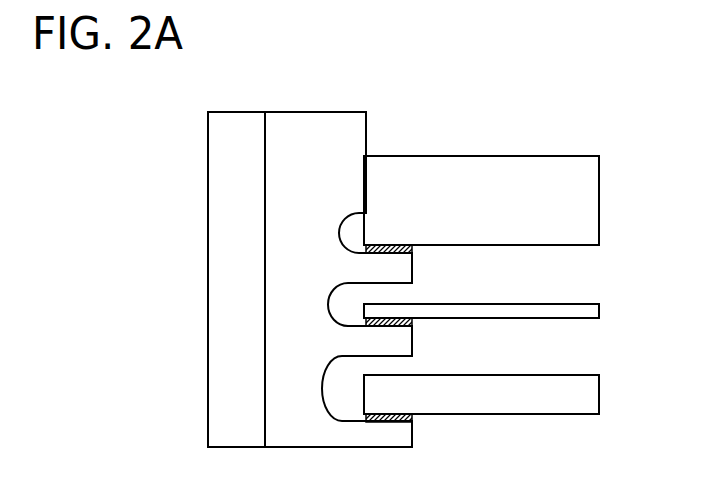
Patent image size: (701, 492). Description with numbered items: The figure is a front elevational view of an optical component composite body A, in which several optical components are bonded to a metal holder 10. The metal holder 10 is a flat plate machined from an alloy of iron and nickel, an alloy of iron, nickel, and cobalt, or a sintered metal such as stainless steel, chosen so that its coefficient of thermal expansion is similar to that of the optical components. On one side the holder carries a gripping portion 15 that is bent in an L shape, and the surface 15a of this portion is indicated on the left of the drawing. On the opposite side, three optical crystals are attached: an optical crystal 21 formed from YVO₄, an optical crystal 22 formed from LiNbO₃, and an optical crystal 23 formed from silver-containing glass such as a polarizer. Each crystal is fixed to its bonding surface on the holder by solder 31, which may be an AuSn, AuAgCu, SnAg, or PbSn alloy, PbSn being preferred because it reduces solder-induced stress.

The metal holder 10 is at (192, 212).
The gripping portion 15 is at (308, 127).
The surface of insulating layer 15a is at (220, 297).
The optical component composite body A is at (392, 138).
The optical crystal 21 is at (567, 172).
The optical crystal 22 is at (570, 305).
The optical crystal 23 is at (560, 381).
The solder 31 is at (412, 247).